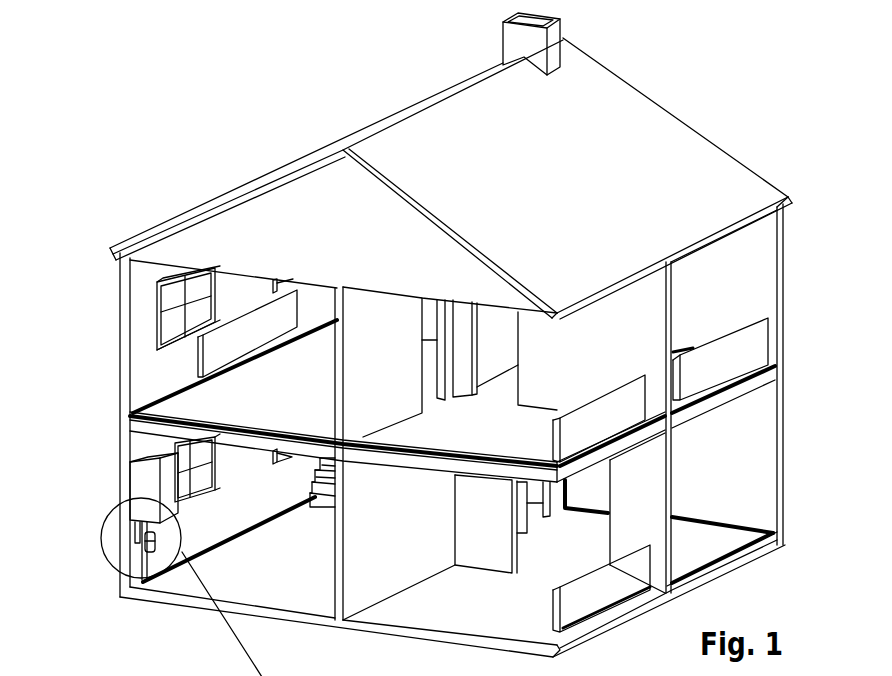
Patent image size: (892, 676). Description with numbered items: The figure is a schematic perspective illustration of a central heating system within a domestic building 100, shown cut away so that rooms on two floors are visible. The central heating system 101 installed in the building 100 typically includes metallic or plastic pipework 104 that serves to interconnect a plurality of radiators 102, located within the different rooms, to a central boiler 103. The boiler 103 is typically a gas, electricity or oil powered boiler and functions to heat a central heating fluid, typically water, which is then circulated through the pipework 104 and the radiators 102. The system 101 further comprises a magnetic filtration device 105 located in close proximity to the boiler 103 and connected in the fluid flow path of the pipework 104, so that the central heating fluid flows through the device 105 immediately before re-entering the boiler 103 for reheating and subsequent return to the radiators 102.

The building 100 is at (451, 335).
The central heating system 101 is at (240, 539).
The radiators 102 is at (250, 327).
The central boiler 103 is at (148, 483).
The pipework 104 is at (465, 460).
The magnetic filtration device 105 is at (145, 547).